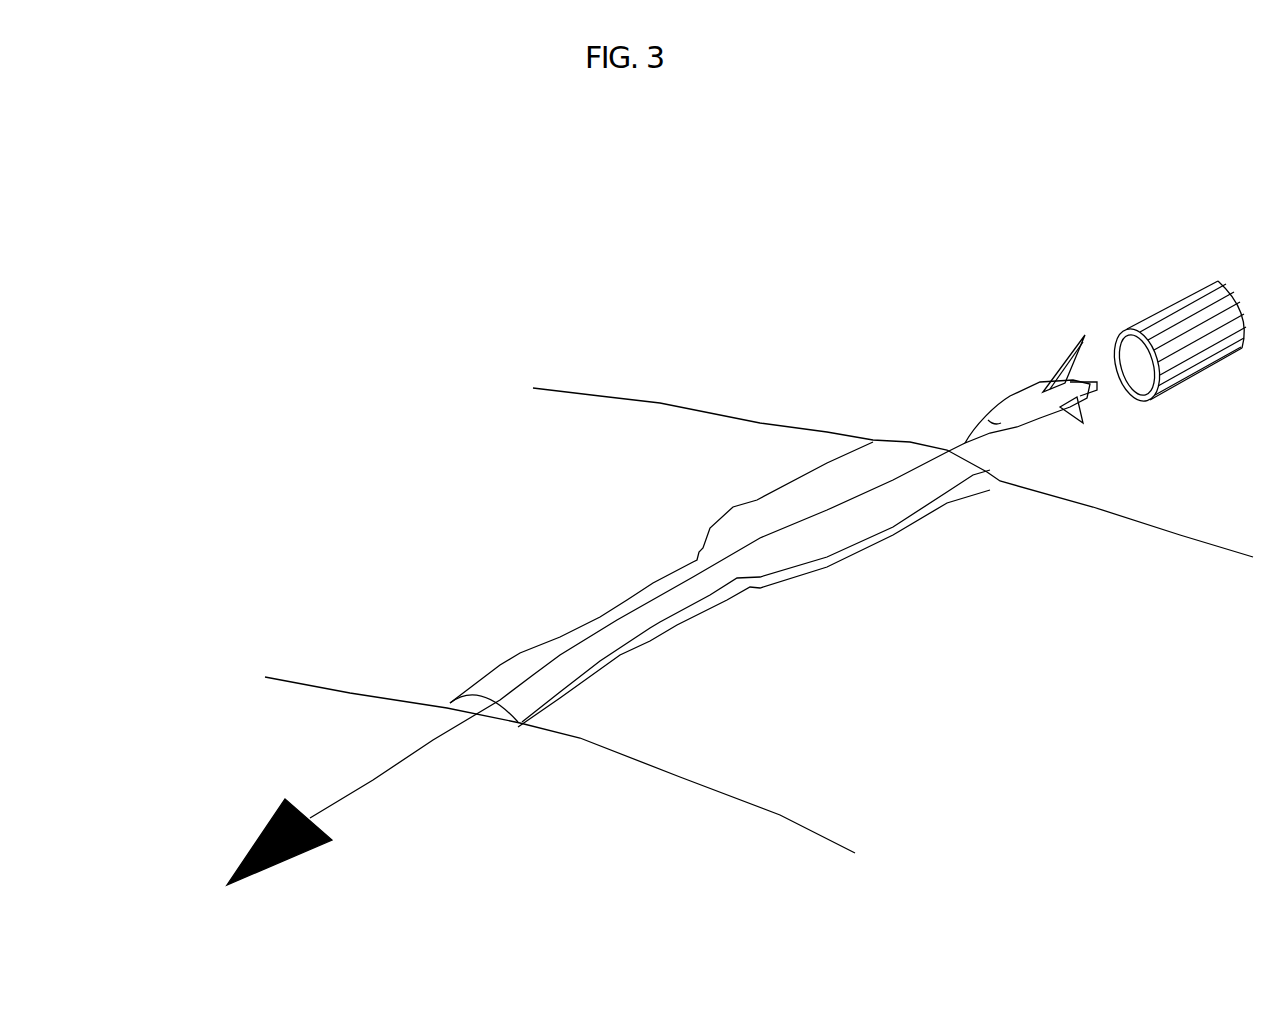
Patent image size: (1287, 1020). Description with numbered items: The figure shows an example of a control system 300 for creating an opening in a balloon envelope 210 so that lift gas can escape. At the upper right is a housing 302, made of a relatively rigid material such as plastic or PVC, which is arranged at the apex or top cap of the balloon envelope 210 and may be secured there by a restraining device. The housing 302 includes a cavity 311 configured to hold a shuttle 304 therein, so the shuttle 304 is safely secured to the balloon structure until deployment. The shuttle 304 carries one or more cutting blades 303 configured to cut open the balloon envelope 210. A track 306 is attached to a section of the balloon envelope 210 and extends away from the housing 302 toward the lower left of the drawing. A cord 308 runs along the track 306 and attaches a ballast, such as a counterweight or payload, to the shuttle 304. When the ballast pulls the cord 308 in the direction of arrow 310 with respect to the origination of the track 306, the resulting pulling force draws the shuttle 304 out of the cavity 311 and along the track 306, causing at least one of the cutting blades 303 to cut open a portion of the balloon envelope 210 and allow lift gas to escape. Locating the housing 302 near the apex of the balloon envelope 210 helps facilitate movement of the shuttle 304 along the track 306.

The control system 300 is at (1168, 73).
The balloon envelope 210 is at (938, 682).
The housing 302 is at (1186, 303).
The cutting blades 303 is at (1055, 368).
The shuttle 304 is at (1022, 397).
The track 306 is at (757, 500).
The cord 308 is at (532, 675).
The arrow 310 is at (373, 780).
The cavity 311 is at (1133, 365).